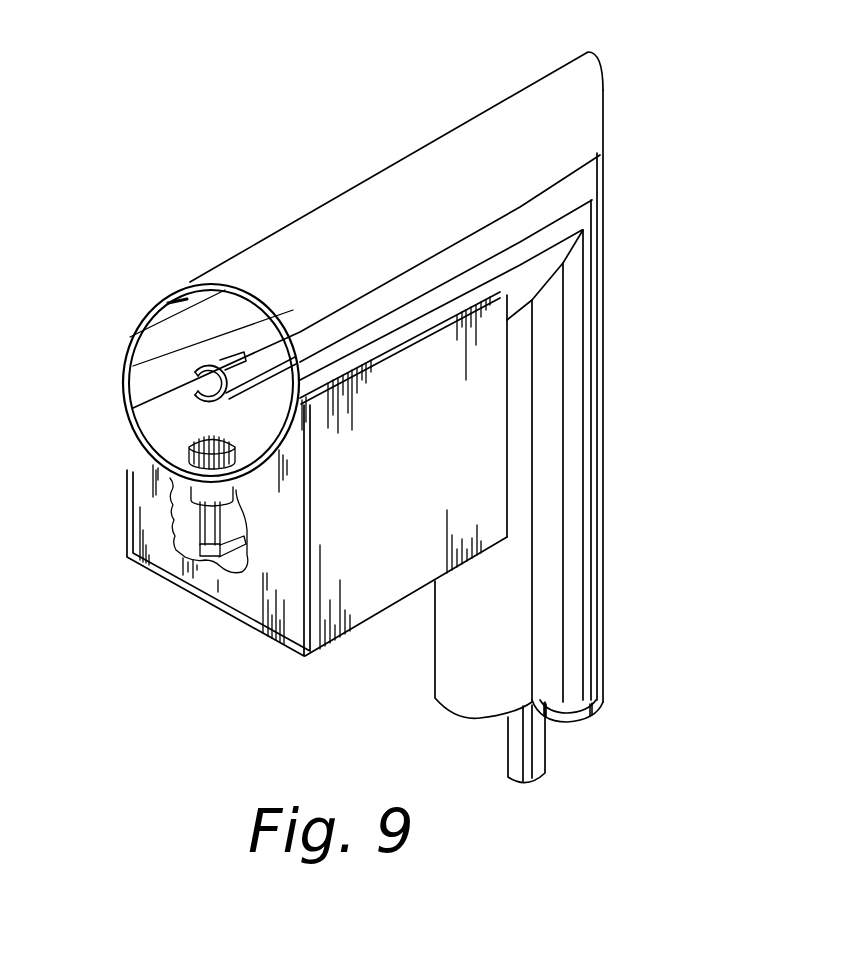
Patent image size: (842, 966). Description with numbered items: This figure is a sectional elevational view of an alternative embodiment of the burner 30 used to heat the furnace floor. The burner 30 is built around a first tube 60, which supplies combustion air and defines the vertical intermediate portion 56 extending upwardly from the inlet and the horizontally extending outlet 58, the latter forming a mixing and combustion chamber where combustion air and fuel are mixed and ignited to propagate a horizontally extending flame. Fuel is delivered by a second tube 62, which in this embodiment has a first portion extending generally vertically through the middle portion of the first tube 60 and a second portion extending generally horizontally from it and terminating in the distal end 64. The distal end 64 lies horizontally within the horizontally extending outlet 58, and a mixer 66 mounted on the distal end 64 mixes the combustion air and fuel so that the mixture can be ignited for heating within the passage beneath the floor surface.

The burner 30 is at (283, 139).
The vertical intermediate portion 56 is at (470, 652).
The horizontally extending outlet 58 is at (517, 127).
The first tube 60 is at (547, 503).
The second tube 62 is at (524, 747).
The distal end 64 is at (221, 362).
The mixer 66 is at (177, 368).